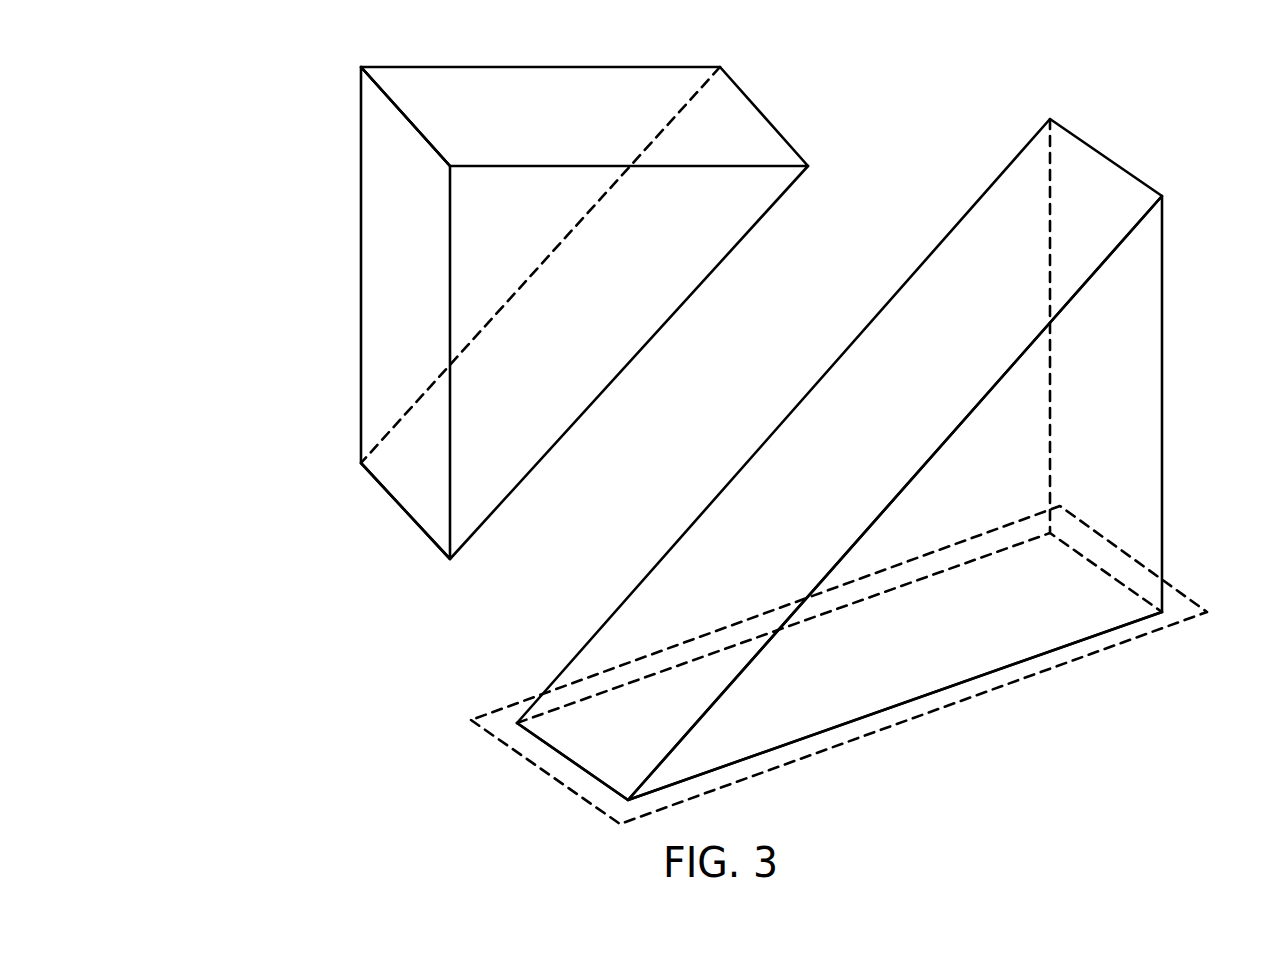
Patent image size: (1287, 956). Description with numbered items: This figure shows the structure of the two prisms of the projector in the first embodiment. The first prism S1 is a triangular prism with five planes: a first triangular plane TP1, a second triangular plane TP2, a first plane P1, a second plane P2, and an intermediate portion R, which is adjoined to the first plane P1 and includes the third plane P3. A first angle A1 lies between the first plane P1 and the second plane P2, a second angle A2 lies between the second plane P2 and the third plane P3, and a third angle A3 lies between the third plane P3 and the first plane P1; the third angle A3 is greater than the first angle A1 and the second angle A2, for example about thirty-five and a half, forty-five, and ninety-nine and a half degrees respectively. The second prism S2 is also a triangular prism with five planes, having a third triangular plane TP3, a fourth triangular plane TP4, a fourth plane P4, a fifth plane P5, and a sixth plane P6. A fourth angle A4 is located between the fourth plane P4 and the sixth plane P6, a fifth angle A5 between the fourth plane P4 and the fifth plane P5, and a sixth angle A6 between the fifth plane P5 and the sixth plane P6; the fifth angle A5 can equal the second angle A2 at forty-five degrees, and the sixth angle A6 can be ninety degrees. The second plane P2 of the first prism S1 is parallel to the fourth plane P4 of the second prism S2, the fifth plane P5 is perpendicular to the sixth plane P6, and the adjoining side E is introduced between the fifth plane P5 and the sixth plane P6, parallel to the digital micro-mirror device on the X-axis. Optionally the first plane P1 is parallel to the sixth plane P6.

The first prism S1 is at (1038, 513).
The second prism S2 is at (583, 141).
The first plane P1 is at (1113, 415).
The second plane P2 is at (975, 283).
The third plane P3 is at (900, 648).
The fourth plane P4 is at (427, 470).
The fifth plane P5 is at (725, 126).
The sixth plane P6 is at (385, 385).
The first triangular plane TP1 is at (993, 620).
The second triangular plane TP2 is at (880, 395).
The third triangular plane TP3 is at (568, 322).
The fourth triangular plane TP4 is at (416, 278).
The first angle A1 is at (1162, 318).
The second angle A2 is at (720, 696).
The third angle A3 is at (1162, 546).
The fourth angle A4 is at (499, 486).
The fifth angle A5 is at (694, 166).
The sixth angle A6 is at (510, 179).
The adjoining side E is at (403, 116).
The intermediate portion R is at (545, 771).